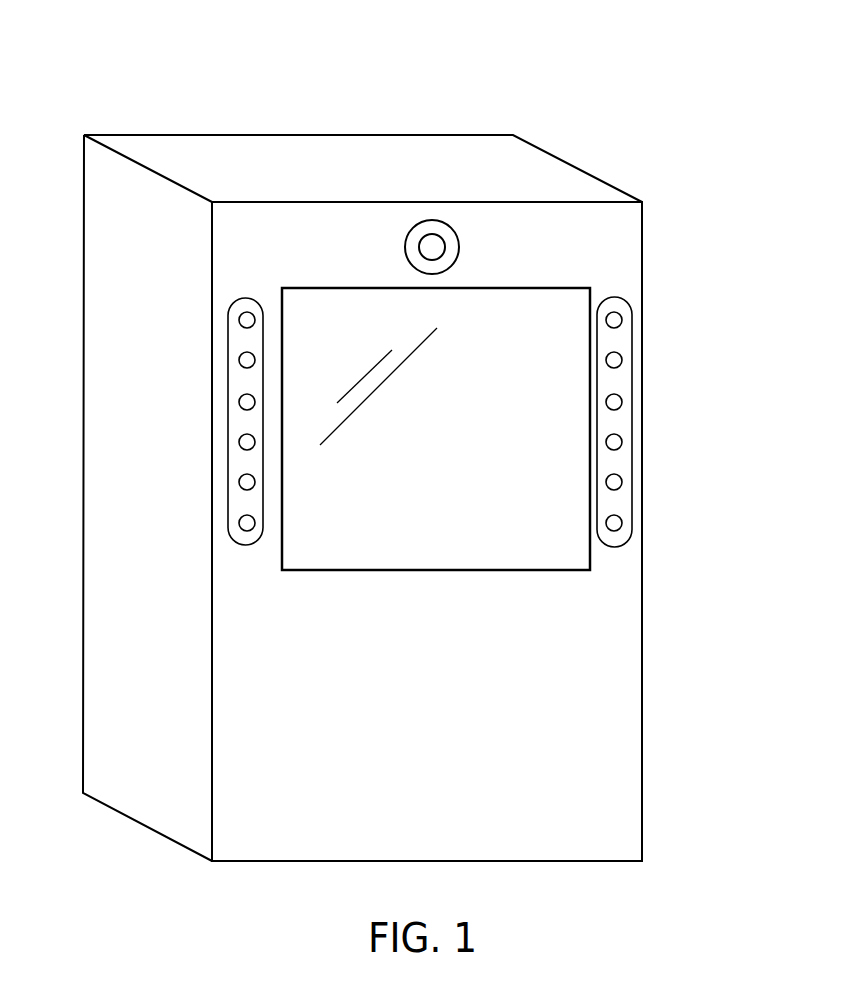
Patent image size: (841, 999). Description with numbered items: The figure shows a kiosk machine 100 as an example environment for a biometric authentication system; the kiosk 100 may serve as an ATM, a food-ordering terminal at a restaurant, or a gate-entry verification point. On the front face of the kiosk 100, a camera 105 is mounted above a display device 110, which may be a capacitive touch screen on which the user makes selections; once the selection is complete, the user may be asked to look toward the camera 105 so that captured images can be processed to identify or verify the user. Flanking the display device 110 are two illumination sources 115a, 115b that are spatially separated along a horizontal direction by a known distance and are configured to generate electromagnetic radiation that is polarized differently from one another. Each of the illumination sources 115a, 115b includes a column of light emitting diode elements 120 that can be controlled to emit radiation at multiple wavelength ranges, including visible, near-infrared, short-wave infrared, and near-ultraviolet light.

The kiosk machine 100 is at (106, 84).
The camera 105 is at (432, 233).
The display device 110 is at (358, 298).
The illumination source 115a is at (229, 471).
The illumination source 115b is at (631, 392).
The light emitting diode (LED) elements 120 is at (631, 525).